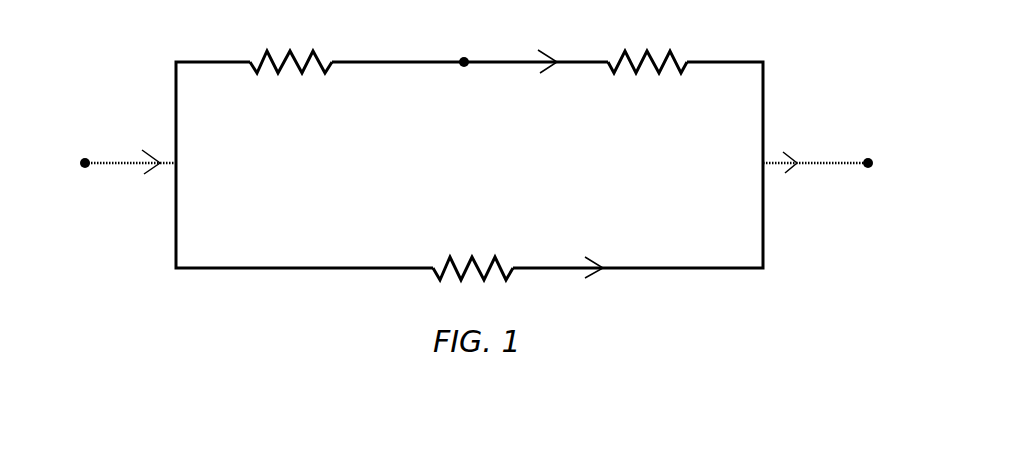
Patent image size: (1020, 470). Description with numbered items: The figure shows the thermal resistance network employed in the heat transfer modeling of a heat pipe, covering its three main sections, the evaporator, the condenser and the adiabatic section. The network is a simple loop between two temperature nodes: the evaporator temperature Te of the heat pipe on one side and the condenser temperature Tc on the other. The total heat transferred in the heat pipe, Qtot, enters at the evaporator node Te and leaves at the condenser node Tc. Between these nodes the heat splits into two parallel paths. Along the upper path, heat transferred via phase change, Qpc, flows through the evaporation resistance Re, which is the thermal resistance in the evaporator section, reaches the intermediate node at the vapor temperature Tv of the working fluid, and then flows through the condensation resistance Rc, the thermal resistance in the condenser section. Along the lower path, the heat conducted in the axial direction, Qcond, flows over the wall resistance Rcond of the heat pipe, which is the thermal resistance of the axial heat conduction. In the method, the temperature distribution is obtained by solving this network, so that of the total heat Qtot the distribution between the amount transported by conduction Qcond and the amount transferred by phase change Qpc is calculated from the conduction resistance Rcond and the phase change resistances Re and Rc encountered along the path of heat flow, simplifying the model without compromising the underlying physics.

The thermal resistance in the evaporator section Re is at (291, 41).
The thermal resistance in the condenser section Rc is at (647, 45).
The thermal resistance of the axial heat conduction Rcond is at (473, 249).
The evaporator temperature Te is at (106, 143).
The vapor temperature Tv is at (464, 41).
The condenser temperature Tc is at (836, 150).
The total heat Qtot is at (472, 178).
The heat transferred via phase change Qpc is at (560, 77).
The heat conducted in the axial direction Qcond is at (619, 253).